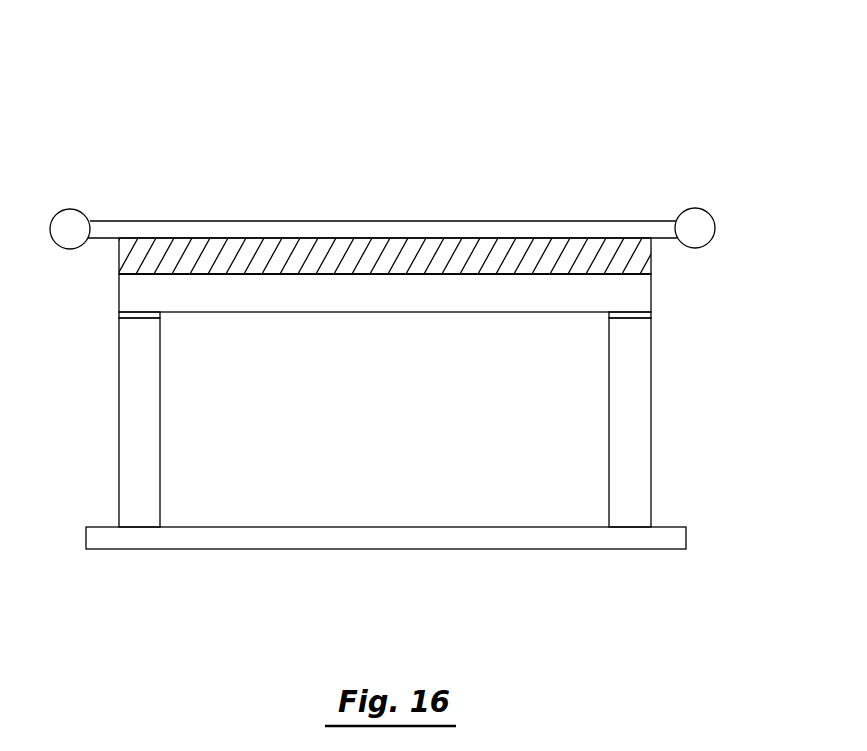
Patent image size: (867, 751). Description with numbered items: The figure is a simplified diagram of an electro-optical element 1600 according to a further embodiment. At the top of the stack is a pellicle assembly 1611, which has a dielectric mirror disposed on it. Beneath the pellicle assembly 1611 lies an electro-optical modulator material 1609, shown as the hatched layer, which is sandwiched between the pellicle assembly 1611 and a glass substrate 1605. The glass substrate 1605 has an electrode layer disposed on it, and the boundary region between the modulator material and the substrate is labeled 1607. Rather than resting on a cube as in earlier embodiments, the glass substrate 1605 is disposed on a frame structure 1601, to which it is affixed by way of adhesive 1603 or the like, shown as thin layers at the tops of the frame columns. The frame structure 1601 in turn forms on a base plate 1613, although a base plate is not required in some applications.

The electro-optical element 1600 is at (583, 156).
The frame structure 1601 is at (638, 406).
The adhesive 1603 is at (651, 317).
The glass substrate 1605 is at (628, 289).
The interface / bonding layer 1607 is at (503, 274).
The electro-optical modulator material 1609 is at (335, 250).
The pellicle assembly 1611 is at (422, 228).
The base plate 1613 is at (615, 535).